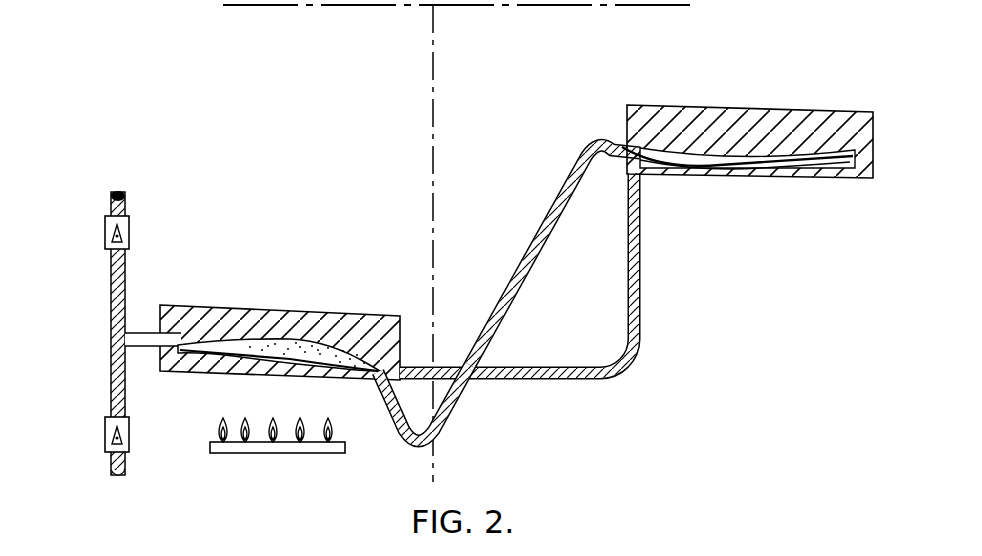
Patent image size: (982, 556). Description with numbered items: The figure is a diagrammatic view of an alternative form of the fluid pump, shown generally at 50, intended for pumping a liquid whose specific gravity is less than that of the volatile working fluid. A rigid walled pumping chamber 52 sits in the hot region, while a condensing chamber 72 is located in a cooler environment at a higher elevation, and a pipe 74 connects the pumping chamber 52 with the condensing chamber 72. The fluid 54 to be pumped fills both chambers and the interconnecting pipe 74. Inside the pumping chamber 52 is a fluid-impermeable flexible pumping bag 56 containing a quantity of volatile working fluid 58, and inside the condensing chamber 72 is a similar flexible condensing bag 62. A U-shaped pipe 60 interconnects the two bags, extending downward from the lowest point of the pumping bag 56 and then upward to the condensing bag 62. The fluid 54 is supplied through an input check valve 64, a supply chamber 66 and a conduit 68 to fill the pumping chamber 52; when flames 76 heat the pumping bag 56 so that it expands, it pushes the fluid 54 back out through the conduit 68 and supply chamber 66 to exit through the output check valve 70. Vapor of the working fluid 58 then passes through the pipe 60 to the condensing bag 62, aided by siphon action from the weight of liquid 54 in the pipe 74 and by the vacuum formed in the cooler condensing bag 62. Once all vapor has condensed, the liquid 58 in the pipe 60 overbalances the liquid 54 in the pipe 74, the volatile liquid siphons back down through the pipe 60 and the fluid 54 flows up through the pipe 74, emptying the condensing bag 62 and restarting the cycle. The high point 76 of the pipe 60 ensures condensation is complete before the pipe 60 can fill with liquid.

The fluid pump 50 is at (317, 163).
The pumping chamber 52 is at (238, 373).
The fluid to be pumped 54 is at (246, 320).
The pumping bag 56 is at (313, 340).
The volatile working fluid 58 is at (368, 375).
The pipe 60 is at (522, 288).
The condensing bag 62 is at (812, 173).
The input check valve 64 is at (106, 437).
The supply chamber 66 is at (111, 294).
The conduit 68 is at (140, 332).
The output check valve 70 is at (129, 230).
The condensing chamber 72 is at (772, 110).
The pipe 74 is at (640, 316).
The flames 76 is at (285, 453).